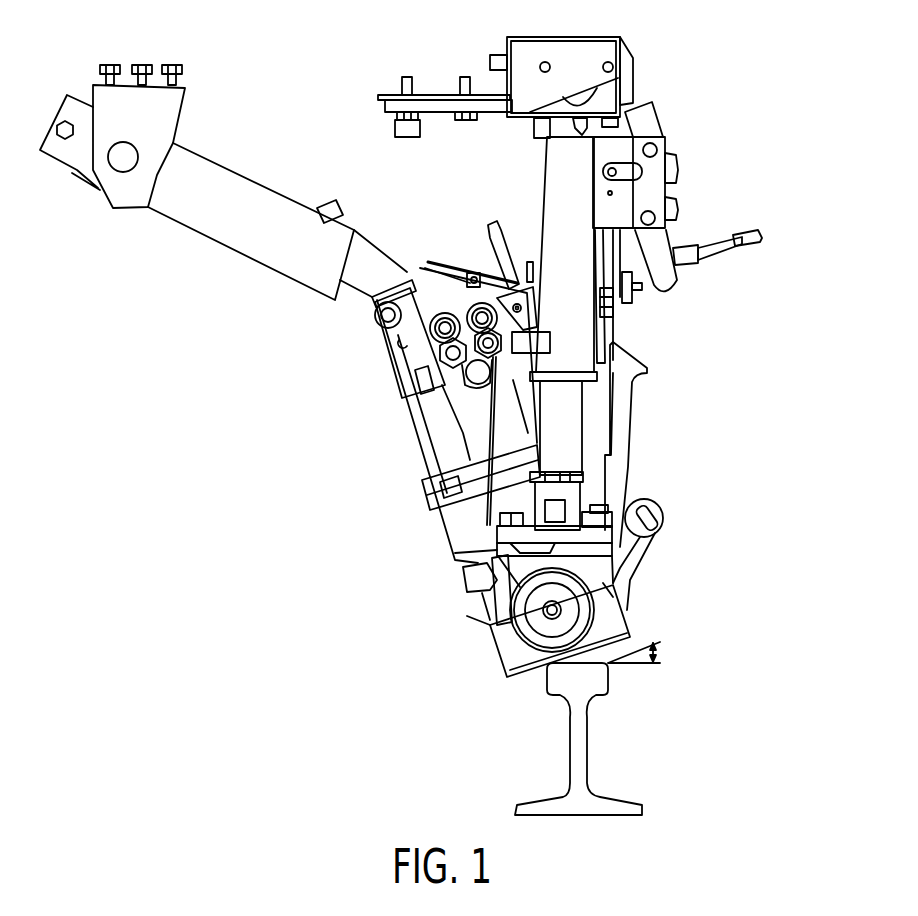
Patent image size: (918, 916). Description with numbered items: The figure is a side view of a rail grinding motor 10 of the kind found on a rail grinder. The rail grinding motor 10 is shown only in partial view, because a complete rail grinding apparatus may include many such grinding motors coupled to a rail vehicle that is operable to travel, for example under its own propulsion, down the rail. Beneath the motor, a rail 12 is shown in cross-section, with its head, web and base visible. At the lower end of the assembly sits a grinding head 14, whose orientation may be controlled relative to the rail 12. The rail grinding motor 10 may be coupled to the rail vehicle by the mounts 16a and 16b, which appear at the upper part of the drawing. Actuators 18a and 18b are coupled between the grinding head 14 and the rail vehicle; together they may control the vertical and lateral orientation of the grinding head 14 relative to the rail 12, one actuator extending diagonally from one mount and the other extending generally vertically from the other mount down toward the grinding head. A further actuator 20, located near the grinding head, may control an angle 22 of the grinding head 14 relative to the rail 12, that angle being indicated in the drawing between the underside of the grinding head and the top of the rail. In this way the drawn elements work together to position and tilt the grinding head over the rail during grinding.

The rail grinding motor 10 is at (786, 452).
The rail 12 is at (642, 812).
The grinding head 14 is at (620, 620).
The mount 16a is at (182, 72).
The mount 16b is at (418, 97).
The actuator 18a is at (297, 278).
The actuator 18b is at (582, 425).
The actuator 20 is at (463, 604).
The angle 22 is at (662, 652).